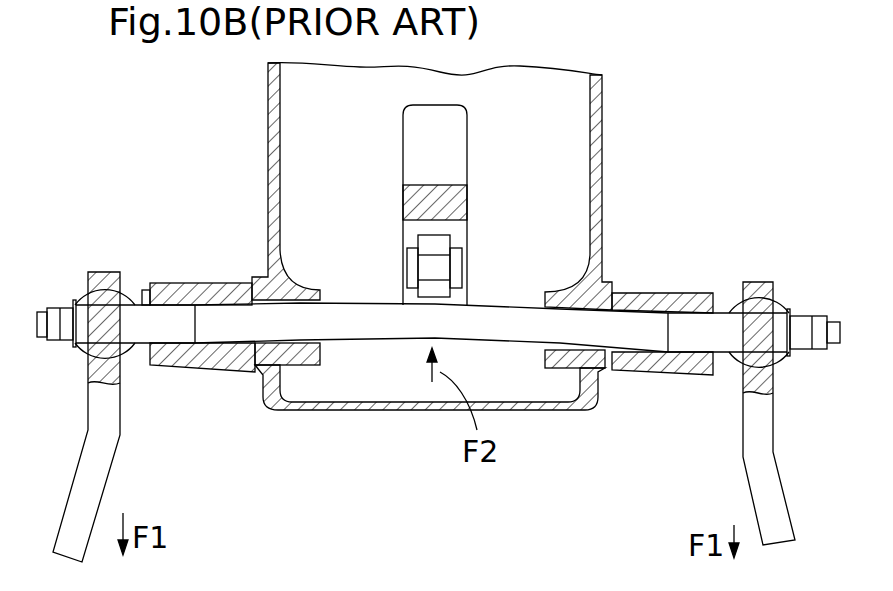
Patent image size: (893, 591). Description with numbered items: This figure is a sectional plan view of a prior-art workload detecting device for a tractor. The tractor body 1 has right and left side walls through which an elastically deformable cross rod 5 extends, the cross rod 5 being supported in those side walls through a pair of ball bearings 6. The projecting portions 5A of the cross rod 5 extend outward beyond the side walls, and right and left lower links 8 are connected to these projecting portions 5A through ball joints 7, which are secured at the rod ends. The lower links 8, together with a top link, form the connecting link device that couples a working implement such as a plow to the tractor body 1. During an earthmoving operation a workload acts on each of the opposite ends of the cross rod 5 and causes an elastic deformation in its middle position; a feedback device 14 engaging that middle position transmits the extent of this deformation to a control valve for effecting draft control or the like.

The housing 1 is at (602, 128).
The roller 14 is at (452, 245).
The bar 5 is at (370, 328).
The pin portion of bar 5A is at (178, 325).
The bushing 6 is at (178, 290).
The ball joint with bolt 7 is at (80, 300).
The bracket 8 is at (100, 455).